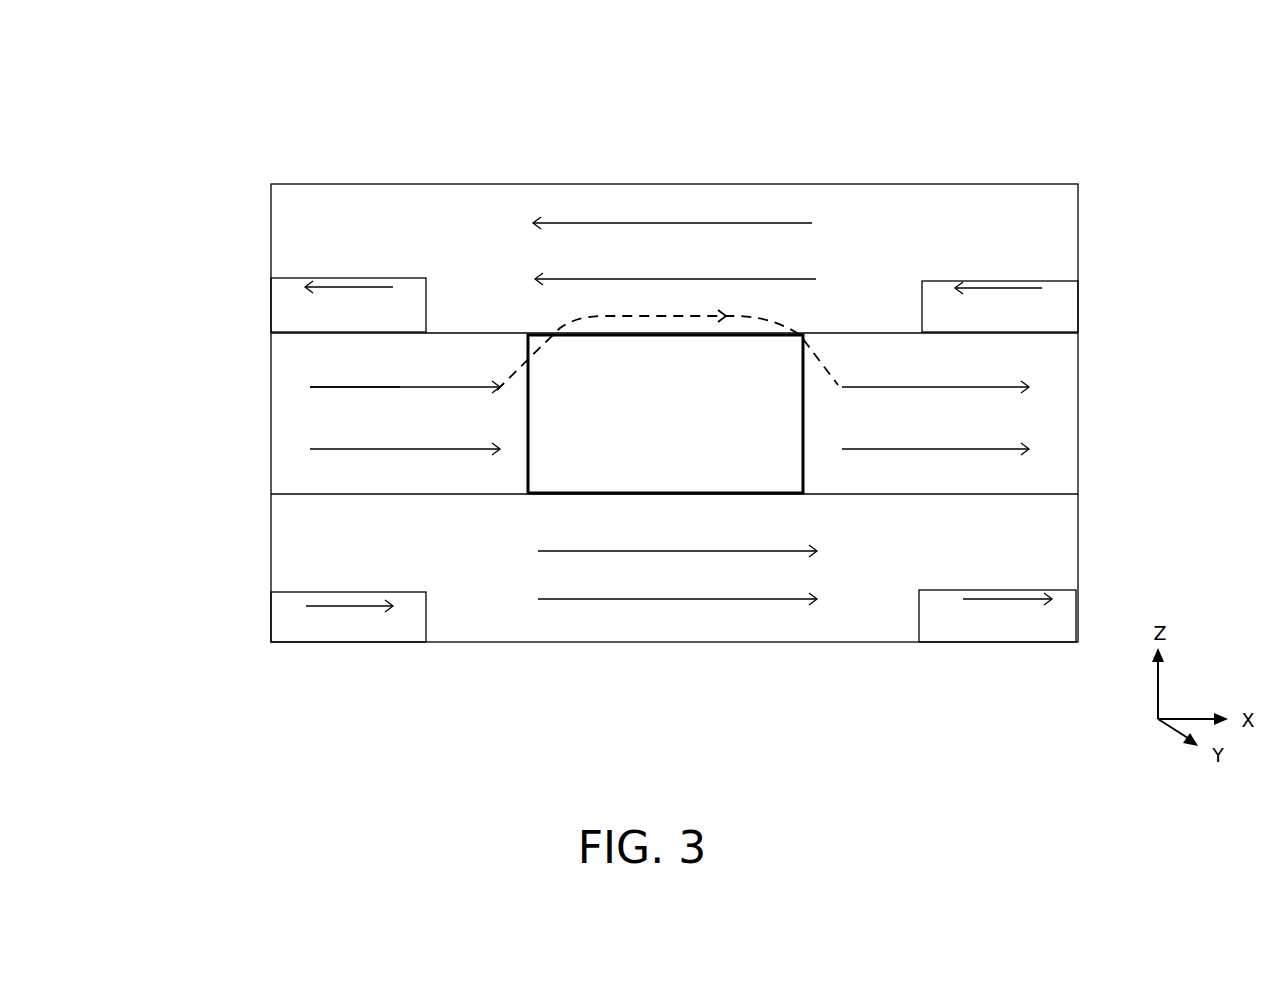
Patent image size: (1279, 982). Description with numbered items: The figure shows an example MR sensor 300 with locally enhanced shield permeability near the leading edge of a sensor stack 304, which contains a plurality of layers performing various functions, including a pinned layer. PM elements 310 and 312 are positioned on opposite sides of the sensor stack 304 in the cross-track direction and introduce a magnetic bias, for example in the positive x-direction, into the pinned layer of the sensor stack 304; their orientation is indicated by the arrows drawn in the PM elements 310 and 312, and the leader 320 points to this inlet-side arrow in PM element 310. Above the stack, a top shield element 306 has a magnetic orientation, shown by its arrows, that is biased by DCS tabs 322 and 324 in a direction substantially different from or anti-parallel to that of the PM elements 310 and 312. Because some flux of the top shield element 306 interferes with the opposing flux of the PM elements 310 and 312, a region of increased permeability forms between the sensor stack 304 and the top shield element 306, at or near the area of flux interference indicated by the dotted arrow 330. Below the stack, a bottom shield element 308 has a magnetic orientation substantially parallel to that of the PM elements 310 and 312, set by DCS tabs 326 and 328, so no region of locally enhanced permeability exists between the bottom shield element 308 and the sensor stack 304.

The MR sensor 300 is at (215, 100).
The sensor stack 304 is at (645, 425).
The top shield element 306 is at (655, 255).
The bottom shield element 308 is at (655, 579).
The PM element 310 is at (378, 430).
The PM element 312 is at (918, 430).
The inlet flow stream 320 is at (330, 387).
The DCS tab 322 is at (327, 318).
The DCS tab 324 is at (979, 319).
The DCS tab 326 is at (327, 630).
The DCS tab 328 is at (977, 629).
The dotted arrow 330 is at (558, 330).